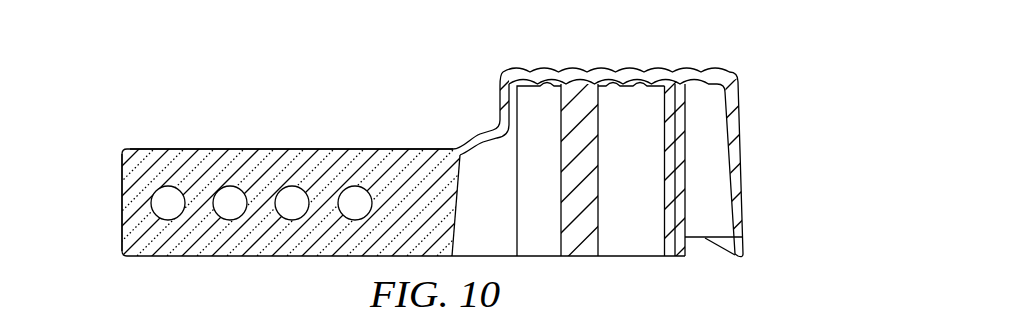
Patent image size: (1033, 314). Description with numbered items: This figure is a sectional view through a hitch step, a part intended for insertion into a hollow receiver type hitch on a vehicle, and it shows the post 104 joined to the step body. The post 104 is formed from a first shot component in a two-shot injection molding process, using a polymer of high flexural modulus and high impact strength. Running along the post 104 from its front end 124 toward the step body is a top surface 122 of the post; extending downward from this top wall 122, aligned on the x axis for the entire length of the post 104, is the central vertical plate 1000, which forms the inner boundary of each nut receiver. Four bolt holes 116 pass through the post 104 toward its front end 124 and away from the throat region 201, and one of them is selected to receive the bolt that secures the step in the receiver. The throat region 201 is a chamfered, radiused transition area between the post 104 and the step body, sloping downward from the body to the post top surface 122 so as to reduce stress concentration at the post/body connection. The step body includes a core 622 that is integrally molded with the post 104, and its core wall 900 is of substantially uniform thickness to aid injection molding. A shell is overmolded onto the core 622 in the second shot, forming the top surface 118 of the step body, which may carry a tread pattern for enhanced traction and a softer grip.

The post 104 is at (167, 145).
The post top surface 122 is at (247, 148).
The front end of the post 124 is at (122, 190).
The bolt holes 116 is at (290, 195).
The central vertical plate 1000 is at (182, 243).
The throat region 201 is at (477, 130).
The top surface 118 is at (658, 66).
The core 622 is at (583, 218).
The core wall 900 is at (637, 86).